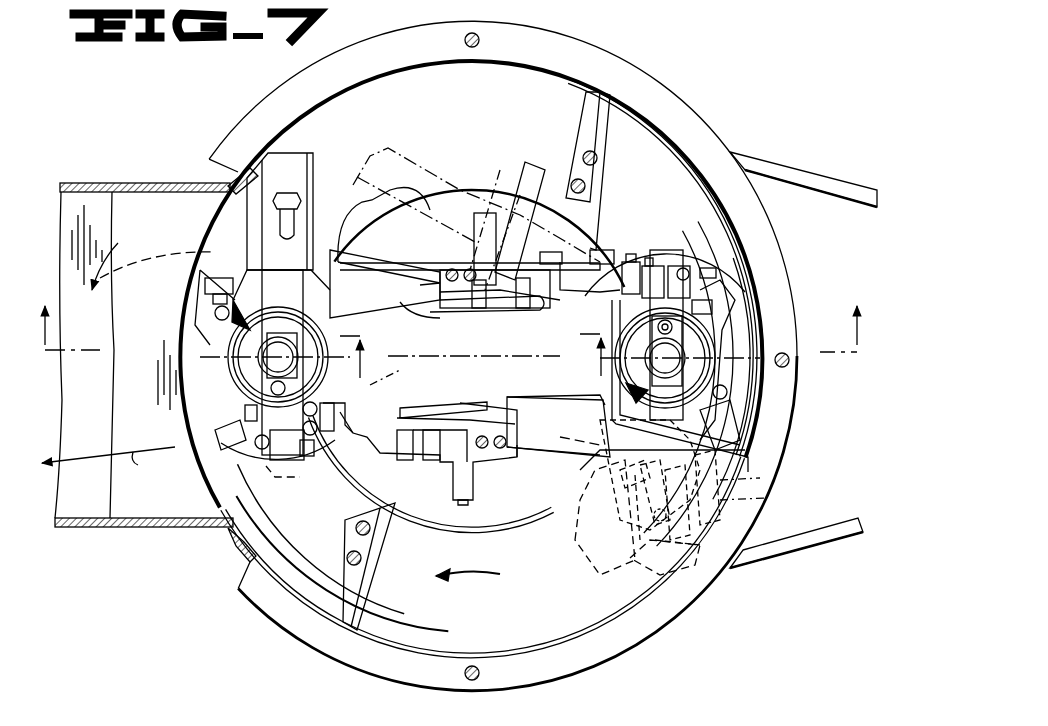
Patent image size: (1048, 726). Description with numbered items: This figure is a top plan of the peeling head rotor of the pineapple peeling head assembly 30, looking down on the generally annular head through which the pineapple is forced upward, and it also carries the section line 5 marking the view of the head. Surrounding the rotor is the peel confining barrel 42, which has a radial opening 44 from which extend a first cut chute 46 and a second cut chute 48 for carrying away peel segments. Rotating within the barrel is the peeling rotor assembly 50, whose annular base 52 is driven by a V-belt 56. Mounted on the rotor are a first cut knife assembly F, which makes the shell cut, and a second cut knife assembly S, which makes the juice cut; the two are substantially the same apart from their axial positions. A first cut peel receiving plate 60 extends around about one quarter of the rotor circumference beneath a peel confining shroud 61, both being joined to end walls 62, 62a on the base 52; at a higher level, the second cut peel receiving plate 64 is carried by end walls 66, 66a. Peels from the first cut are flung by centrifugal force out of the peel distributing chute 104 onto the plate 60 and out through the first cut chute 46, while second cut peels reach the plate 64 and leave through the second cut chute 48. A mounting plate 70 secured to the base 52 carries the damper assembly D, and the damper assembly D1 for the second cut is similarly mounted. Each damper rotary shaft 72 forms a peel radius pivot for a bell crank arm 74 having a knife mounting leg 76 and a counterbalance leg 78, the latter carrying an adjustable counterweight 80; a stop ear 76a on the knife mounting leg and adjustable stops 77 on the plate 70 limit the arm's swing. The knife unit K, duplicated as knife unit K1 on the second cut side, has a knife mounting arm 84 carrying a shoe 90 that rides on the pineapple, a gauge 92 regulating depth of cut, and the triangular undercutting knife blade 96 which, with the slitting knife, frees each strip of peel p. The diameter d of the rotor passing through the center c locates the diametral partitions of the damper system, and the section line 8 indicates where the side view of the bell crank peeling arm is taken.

The peeling head assembly 30 is at (684, 48).
The peel confining shroud 61 is at (470, 114).
The second cut peel receiving plate 64 is at (547, 612).
The first cut peel receiving plate 60 is at (372, 206).
The peel distributing chute 104 is at (390, 268).
The first cut knife assembly F is at (494, 215).
The annular base 52 is at (636, 174).
The end wall 62a is at (590, 115).
The V-belt 56 is at (792, 178).
The peeling rotor assembly 50 is at (726, 248).
The first cut chute 46 is at (101, 326).
The second cut chute 48 is at (159, 294).
The radial opening 44 is at (212, 186).
The peel confining barrel 42 is at (236, 548).
The end wall 62 is at (244, 272).
The damper assembly D1 is at (225, 333).
The damper assembly D is at (705, 335).
The mounting plate 70 is at (712, 312).
The bell crank arm 74 is at (740, 408).
The knife mounting leg 76 is at (626, 262).
The stop ear 76a is at (676, 266).
The adjustable stops 77 is at (648, 266).
The knife mounting arm 84 is at (580, 300).
The gauge 92 is at (534, 300).
The shoe 90 is at (430, 300).
The triangular undercutting knife blade 96 is at (450, 305).
The knife unit K is at (480, 310).
The center c is at (470, 358).
The diameter d is at (385, 378).
The knife unit K1 is at (486, 406).
The damper rotary shaft 72 is at (648, 366).
The section line 8- 8 is at (470, 356).
The section line 5- 5 is at (449, 345).
The second cut knife assembly S is at (393, 452).
The end wall 66a is at (370, 602).
The end wall 66 is at (748, 452).
The strip of peel p is at (765, 498).
The counterbalance leg 78 is at (590, 556).
The counterweight 80 is at (680, 568).